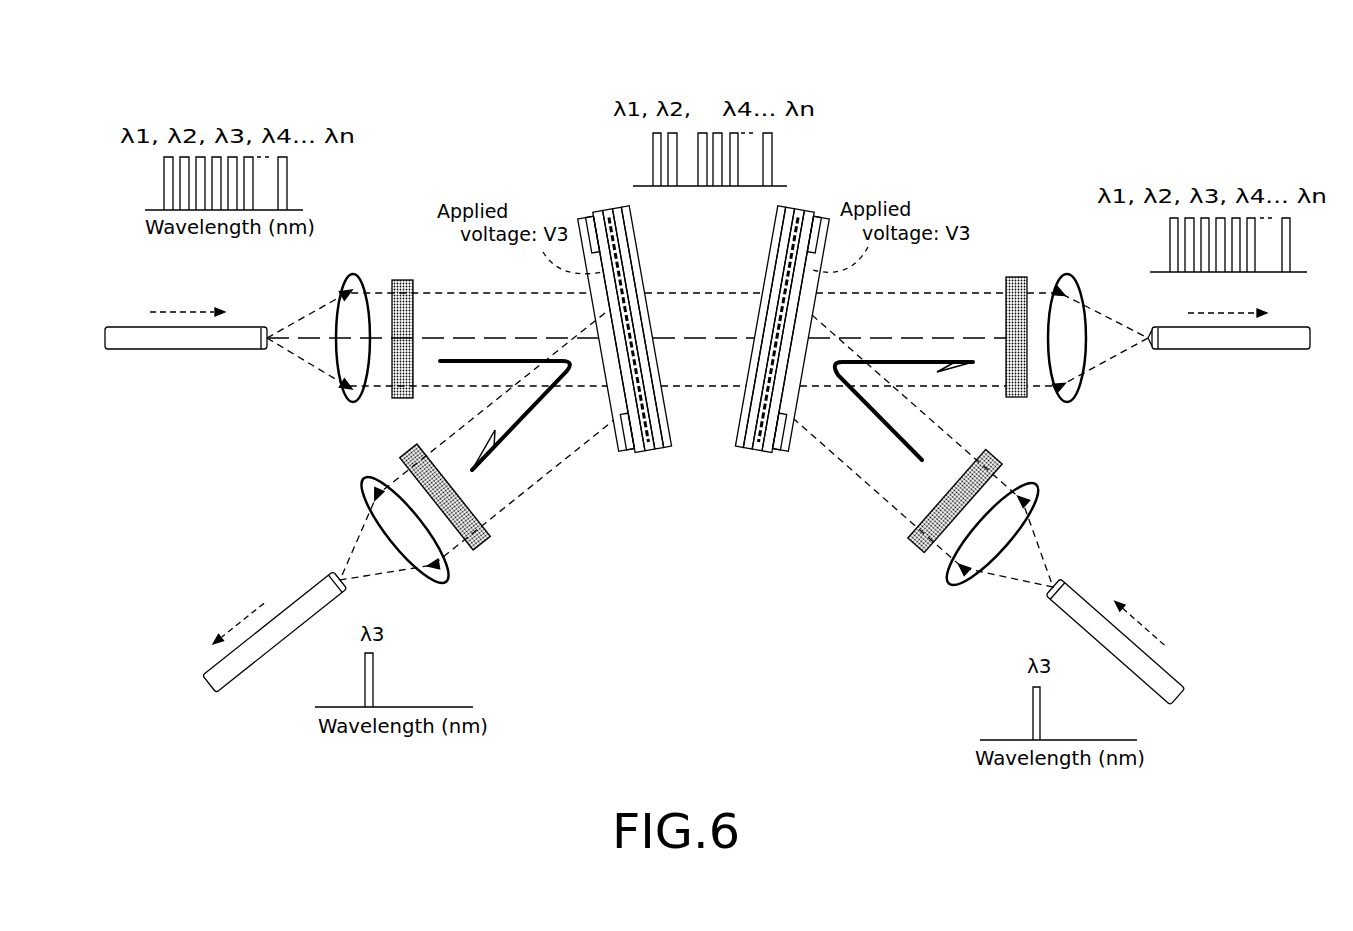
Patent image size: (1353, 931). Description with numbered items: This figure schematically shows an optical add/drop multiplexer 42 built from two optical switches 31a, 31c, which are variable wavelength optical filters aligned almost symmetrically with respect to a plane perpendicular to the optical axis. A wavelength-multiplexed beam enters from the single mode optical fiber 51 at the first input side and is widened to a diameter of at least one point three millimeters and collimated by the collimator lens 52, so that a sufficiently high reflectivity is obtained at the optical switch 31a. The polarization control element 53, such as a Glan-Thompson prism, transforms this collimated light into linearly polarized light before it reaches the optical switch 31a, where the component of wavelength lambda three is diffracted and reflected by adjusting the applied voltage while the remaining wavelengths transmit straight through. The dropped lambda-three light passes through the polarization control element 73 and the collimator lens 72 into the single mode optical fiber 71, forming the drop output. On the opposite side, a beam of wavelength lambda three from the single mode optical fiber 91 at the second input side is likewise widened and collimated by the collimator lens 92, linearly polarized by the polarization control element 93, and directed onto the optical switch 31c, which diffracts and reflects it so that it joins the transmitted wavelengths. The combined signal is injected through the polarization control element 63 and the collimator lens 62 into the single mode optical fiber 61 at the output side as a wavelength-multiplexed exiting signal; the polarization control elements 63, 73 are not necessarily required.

The optical add/drop multiplexer 42 is at (586, 82).
The optical switch 31a is at (600, 212).
The optical switch 31c is at (810, 212).
The single mode optical fiber 51 is at (190, 336).
The collimator lens 52 is at (345, 397).
The polarization control element 53 is at (402, 377).
The single mode optical fiber 61 is at (1218, 345).
The collimator lens 62 is at (1073, 380).
The polarization control element 63 is at (1014, 392).
The single mode optical fiber 71 is at (276, 629).
The collimator lens 72 is at (437, 574).
The polarization control element 73 is at (480, 535).
The single mode optical fiber 91 is at (1170, 681).
The collimator lens 92 is at (955, 581).
The polarization control element 93 is at (921, 546).